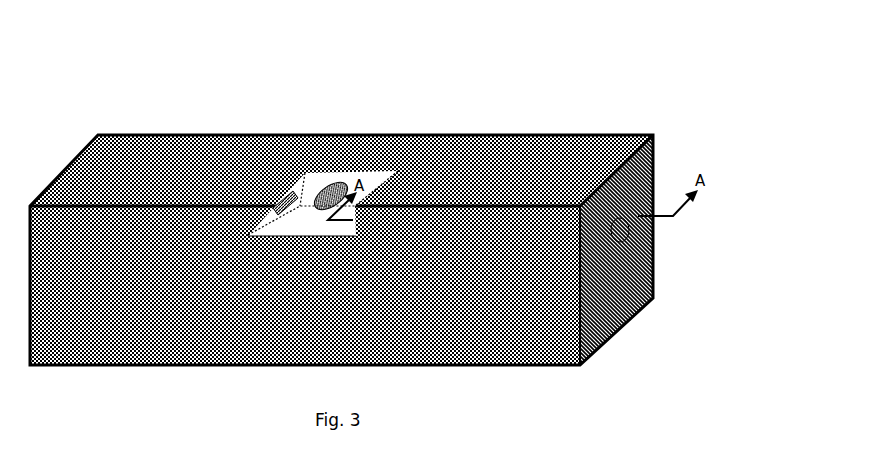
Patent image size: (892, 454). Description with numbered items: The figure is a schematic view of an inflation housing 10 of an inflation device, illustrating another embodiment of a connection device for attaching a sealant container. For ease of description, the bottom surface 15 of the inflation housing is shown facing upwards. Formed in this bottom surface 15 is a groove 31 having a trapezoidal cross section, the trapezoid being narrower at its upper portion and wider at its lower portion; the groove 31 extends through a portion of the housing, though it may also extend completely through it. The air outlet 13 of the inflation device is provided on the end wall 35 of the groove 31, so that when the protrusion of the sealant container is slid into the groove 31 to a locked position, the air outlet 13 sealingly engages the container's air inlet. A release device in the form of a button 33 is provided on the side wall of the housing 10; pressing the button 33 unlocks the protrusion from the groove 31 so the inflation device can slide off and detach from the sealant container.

The housing block 10 is at (542, 337).
The bottom surface 15 is at (492, 166).
The groove 31 is at (270, 217).
The air outlet 13 is at (317, 182).
The end wall 35 is at (322, 173).
The button 33 is at (620, 223).